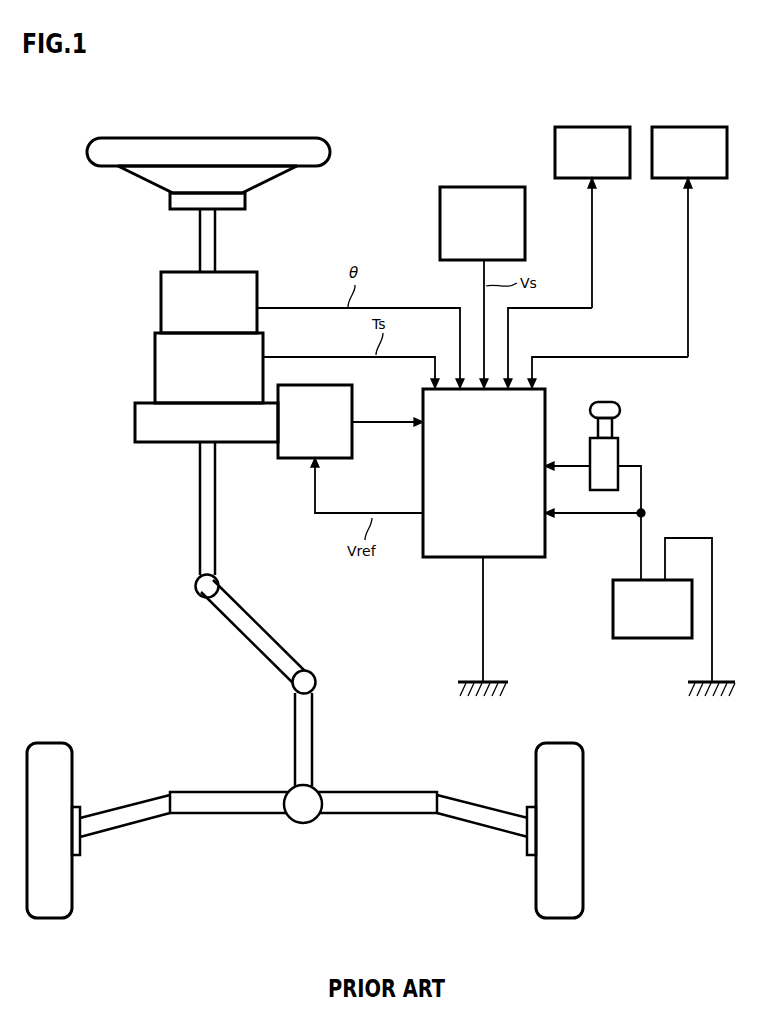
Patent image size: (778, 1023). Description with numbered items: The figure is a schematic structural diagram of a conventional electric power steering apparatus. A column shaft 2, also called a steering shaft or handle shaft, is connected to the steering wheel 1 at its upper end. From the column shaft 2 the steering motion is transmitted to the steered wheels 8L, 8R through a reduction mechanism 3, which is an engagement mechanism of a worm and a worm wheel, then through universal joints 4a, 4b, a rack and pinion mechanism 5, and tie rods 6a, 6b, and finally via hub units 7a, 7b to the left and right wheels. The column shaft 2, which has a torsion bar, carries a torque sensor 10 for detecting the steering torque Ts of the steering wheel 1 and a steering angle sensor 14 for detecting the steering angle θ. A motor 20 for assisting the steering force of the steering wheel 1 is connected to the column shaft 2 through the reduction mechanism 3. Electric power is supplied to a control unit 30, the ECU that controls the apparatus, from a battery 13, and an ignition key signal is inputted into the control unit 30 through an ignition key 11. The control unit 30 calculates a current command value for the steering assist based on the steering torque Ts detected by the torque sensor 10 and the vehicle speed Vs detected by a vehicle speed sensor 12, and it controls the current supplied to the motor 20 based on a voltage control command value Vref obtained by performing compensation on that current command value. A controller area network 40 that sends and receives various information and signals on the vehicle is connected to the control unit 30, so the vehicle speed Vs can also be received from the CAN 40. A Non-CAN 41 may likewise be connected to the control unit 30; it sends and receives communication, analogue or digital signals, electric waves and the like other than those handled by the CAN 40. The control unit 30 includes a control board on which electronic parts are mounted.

The steering wheel 1 is at (331, 147).
The column shaft 2 is at (199, 248).
The reduction mechanism 3 is at (135, 427).
The universal joint 4a is at (195, 592).
The universal joint 4b is at (292, 688).
The rack and pinion mechanism 5 is at (316, 788).
The tie rod 6a is at (108, 812).
The tie rod 6b is at (465, 798).
The hub unit 7a is at (82, 852).
The hub unit 7b is at (526, 852).
The steered wheel 8L is at (73, 905).
The steered wheel 8R is at (536, 905).
The torque sensor 10 is at (155, 357).
The ignition key 11 is at (622, 408).
The vehicle speed sensor 12 is at (531, 199).
The battery 13 is at (613, 602).
The steering angle sensor 14 is at (161, 302).
The motor 20 is at (356, 390).
The control unit 30 is at (548, 391).
The controller area network 40 is at (713, 125).
The Non-CAN 41 is at (617, 125).